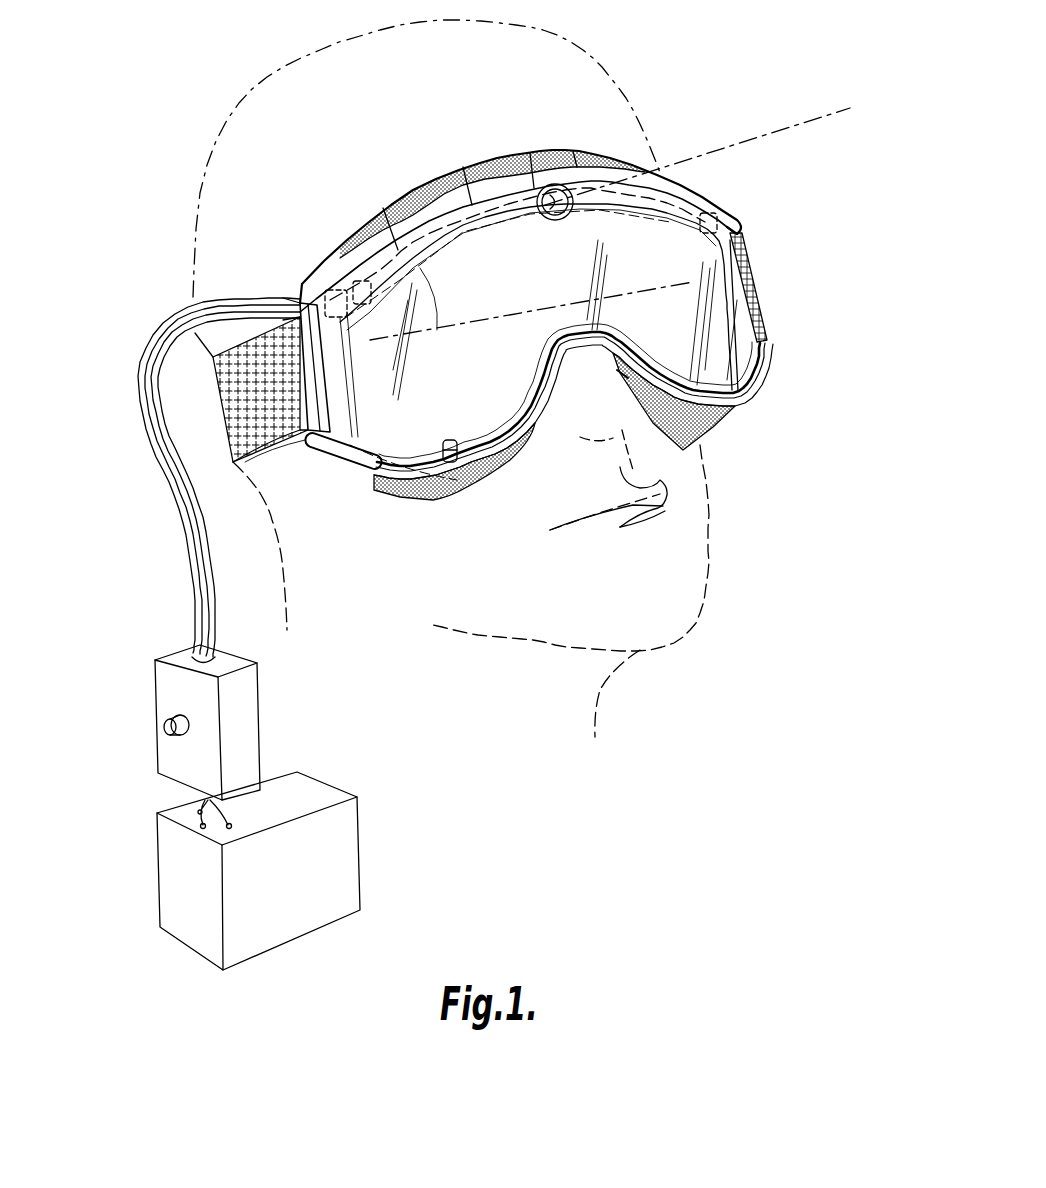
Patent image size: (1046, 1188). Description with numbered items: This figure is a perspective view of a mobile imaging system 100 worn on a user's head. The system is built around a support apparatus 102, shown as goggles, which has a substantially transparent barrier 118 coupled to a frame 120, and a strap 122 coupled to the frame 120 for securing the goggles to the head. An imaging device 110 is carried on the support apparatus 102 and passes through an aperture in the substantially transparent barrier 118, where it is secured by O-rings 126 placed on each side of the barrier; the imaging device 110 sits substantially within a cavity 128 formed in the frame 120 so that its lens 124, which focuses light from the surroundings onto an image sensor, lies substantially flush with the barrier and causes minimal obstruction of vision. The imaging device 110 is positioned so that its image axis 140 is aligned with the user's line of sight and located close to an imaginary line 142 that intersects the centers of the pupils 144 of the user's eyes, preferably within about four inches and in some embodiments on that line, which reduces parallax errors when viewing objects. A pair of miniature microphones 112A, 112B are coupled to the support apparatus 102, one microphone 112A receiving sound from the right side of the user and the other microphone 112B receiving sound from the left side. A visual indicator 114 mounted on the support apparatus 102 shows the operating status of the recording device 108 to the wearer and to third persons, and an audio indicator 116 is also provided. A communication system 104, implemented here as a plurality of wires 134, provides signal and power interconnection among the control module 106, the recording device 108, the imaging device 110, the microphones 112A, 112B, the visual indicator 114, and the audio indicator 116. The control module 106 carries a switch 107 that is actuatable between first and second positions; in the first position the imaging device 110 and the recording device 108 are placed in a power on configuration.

The mobile imaging system 100 is at (725, 78).
The support apparatus 102 is at (762, 393).
The communication system 104 is at (196, 303).
The control module 106 is at (253, 730).
The switch 107 is at (168, 718).
The recording device 108 is at (345, 887).
The imaging device 110 is at (535, 195).
The microphone 112A is at (330, 287).
The microphone 112B is at (717, 213).
The visual indicator 114 is at (440, 460).
The audio indicator 116 is at (343, 253).
The substantially transparent barrier 118 is at (730, 313).
The frame 120 is at (733, 413).
The strap 122 is at (227, 423).
The lens 124 is at (565, 185).
The O-rings 126 is at (512, 200).
The cavity 128 is at (403, 432).
The wires 134 is at (180, 520).
The image axis 140 is at (700, 150).
The imaginary line 142 is at (373, 213).
The pupils 144 is at (462, 322).